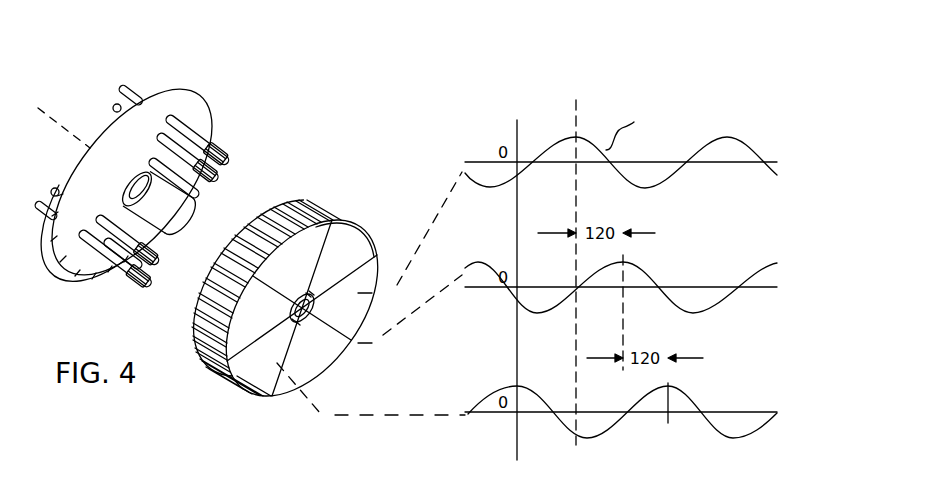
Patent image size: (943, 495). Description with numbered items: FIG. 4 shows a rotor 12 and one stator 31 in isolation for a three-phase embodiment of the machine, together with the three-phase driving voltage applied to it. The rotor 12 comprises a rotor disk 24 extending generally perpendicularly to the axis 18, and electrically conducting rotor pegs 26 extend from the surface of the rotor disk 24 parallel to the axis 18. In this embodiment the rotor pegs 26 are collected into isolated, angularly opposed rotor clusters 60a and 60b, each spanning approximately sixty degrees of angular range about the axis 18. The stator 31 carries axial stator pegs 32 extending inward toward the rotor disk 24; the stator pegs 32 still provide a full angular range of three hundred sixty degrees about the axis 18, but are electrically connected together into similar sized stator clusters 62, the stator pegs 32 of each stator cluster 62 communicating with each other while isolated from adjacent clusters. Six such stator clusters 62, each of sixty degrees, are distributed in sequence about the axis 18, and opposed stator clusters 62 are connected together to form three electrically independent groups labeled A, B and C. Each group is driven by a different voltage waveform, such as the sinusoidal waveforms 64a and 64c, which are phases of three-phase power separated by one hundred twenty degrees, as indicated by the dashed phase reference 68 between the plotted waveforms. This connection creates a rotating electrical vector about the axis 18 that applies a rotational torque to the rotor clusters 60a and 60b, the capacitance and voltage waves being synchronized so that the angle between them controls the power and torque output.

The rotor 12 is at (207, 91).
The axis 18 is at (72, 130).
The rotor disk 24 is at (173, 92).
The rotor pegs 26 is at (140, 92).
The stator 31 is at (372, 166).
The stator pegs 32 is at (311, 200).
The rotor cluster 60a is at (230, 189).
The rotor cluster 60b is at (165, 276).
The stator clusters 62 is at (377, 277).
The voltage waveform 64a is at (652, 279).
The voltage waveform 64c is at (698, 400).
The phase reference 68 is at (577, 116).